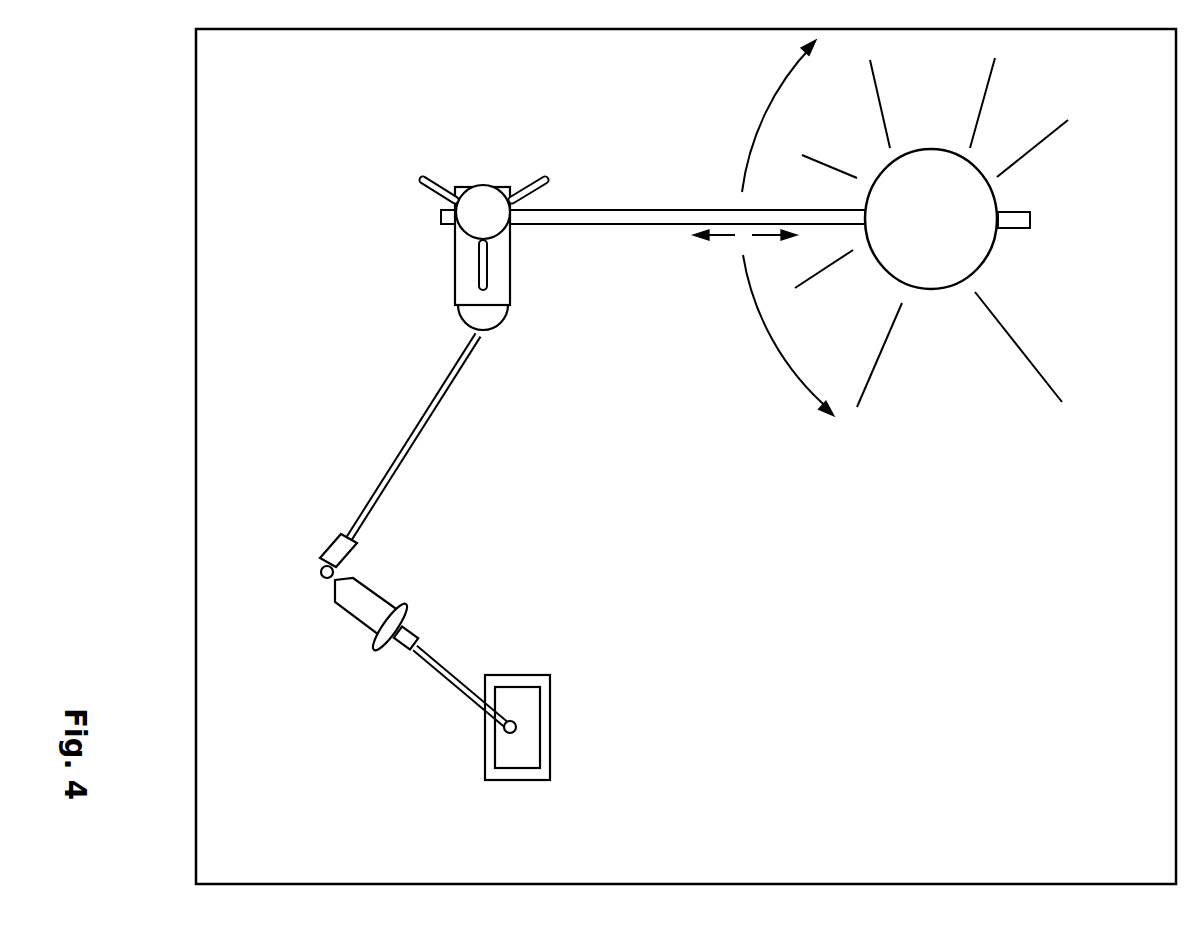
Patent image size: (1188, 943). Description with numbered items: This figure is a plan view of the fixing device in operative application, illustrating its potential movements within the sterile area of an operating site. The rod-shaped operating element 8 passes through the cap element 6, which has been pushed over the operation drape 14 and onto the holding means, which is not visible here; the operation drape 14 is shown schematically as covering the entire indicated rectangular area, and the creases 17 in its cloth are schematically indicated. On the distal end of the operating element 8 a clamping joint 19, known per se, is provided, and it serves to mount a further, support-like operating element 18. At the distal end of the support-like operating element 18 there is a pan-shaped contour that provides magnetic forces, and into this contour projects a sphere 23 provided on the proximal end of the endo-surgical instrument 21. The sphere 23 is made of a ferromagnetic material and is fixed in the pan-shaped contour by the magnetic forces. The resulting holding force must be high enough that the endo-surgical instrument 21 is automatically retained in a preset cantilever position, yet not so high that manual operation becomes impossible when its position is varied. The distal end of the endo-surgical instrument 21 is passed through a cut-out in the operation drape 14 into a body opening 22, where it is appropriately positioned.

The cap element 6 is at (968, 248).
The operating element 8 is at (628, 220).
The operation drape 14 is at (993, 634).
The creases 17 is at (879, 380).
The support-like operating element 18 is at (415, 430).
The clamping joint 19 is at (476, 210).
The endo-surgical instrument 21 is at (393, 620).
The body opening 22 is at (535, 707).
The sphere 23 is at (325, 571).